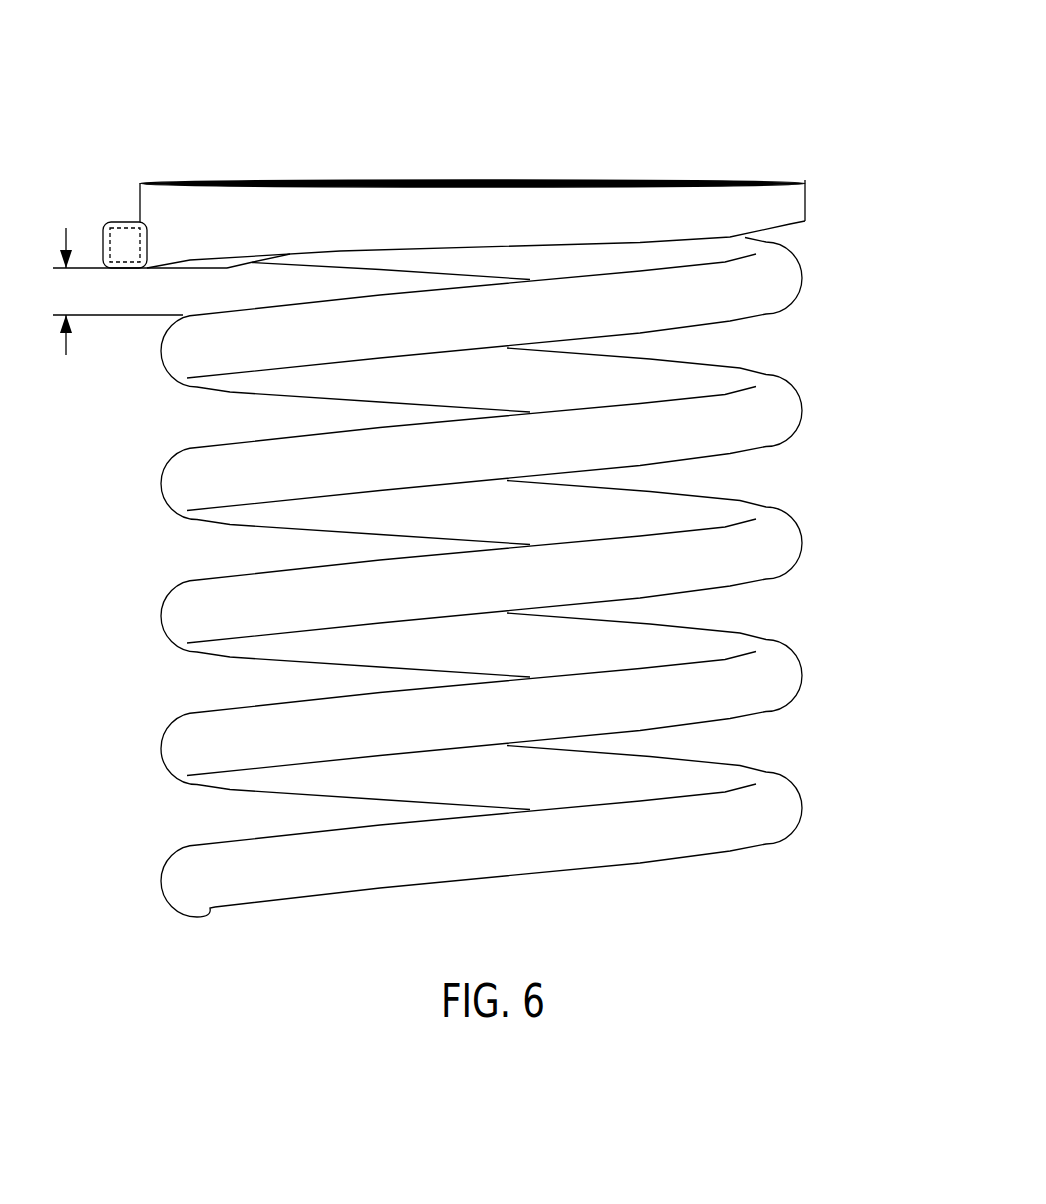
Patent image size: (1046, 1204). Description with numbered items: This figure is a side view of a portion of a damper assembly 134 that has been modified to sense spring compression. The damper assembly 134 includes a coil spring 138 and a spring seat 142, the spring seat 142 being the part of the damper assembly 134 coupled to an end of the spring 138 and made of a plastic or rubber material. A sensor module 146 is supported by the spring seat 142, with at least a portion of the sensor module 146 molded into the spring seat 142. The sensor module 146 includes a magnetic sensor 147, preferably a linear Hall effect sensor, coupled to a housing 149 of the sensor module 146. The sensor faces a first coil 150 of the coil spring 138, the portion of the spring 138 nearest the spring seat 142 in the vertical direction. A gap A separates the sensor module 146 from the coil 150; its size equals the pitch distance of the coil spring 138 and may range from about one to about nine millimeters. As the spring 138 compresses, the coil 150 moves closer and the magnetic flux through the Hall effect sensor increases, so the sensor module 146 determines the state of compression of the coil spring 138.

The damper assembly 134 is at (624, 109).
The coil spring 138 is at (253, 888).
The spring seat 142 is at (230, 200).
The sensor module 146 is at (96, 238).
The magnetic sensor 147 is at (125, 222).
The housing 149 is at (131, 222).
The first coil 150 is at (177, 347).
The gap A is at (72, 347).